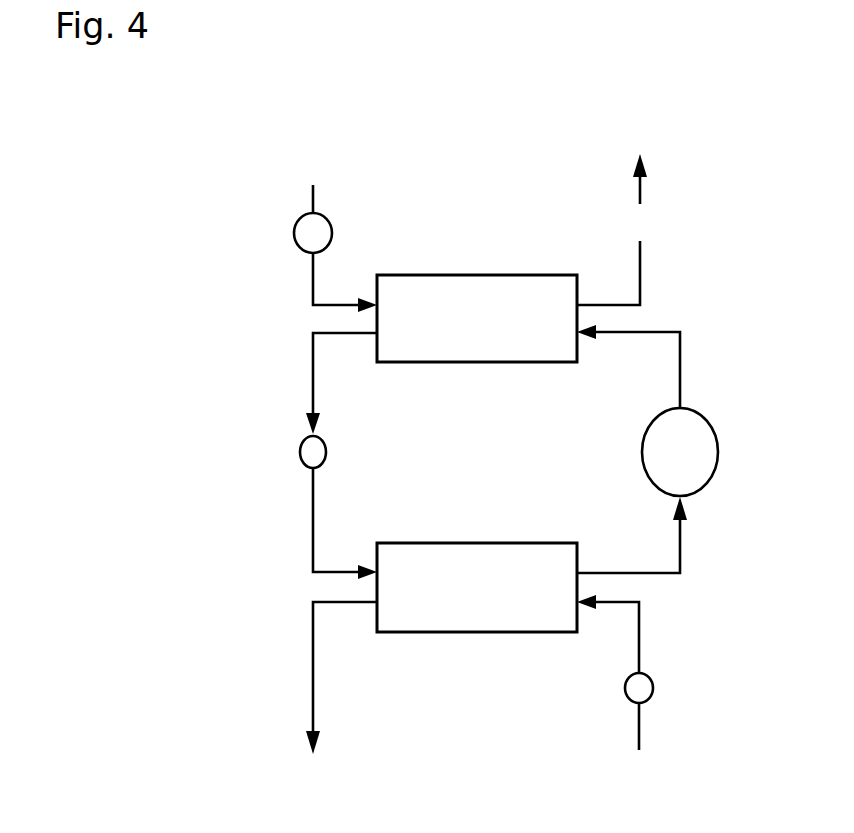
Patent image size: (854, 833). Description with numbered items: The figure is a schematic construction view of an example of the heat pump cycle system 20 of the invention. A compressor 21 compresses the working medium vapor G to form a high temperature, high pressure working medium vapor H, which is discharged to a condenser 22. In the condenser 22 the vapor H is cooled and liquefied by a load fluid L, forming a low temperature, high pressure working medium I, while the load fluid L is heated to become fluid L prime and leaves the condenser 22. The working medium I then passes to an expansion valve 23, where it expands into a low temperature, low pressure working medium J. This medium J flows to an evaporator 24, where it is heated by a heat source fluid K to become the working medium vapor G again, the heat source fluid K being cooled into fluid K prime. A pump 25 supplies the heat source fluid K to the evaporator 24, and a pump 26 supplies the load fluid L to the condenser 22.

The heat pump cycle system 20 is at (471, 192).
The compressor 21 is at (718, 452).
The condenser 22 is at (503, 275).
The expansion valve 23 is at (326, 450).
The evaporator 24 is at (503, 543).
The pump 25 is at (653, 689).
The pump 26 is at (332, 231).